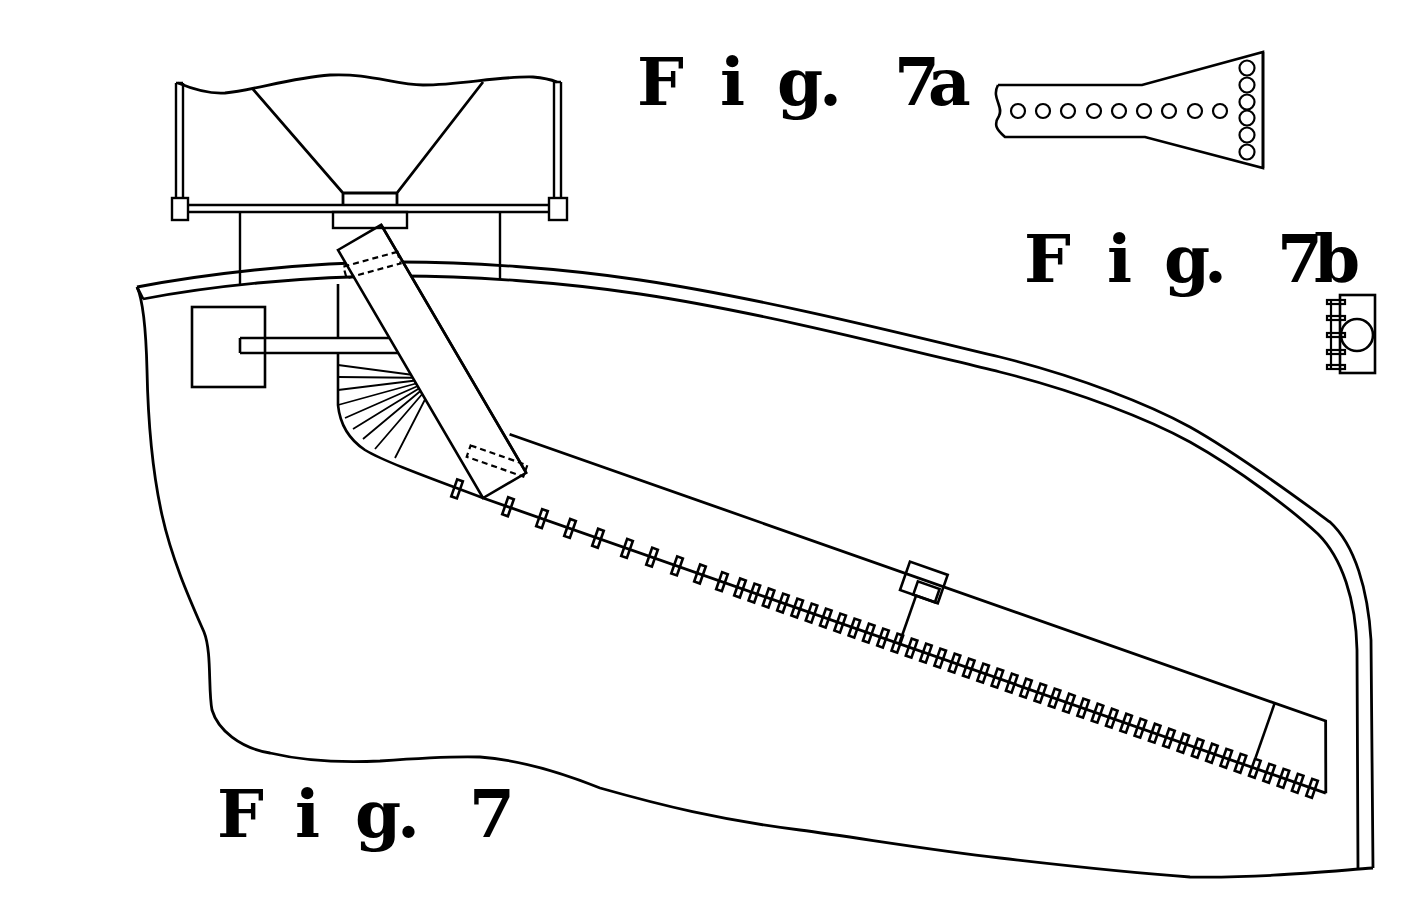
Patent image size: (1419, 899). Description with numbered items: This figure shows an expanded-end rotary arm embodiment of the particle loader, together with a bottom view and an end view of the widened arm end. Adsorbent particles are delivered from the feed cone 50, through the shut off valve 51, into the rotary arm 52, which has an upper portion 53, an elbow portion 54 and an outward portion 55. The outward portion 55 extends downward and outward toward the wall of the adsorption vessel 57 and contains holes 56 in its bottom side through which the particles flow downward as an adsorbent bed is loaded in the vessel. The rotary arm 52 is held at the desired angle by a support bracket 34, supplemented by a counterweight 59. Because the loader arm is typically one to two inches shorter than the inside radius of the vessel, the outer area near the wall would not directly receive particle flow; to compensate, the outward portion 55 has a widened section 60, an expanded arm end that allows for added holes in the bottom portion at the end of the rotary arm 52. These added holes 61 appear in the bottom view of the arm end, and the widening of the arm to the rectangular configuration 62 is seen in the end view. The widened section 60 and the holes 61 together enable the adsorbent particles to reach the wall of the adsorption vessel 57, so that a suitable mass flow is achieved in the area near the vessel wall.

In FIG. 7, the support bracket 34 is at (470, 373).
In FIG. 7, the feed cone 50 is at (375, 113).
In FIG. 7, the shut off valve 51 is at (420, 228).
In FIG. 7, the rotary arm 52 is at (935, 560).
In FIG. 7, the upper portion 53 is at (405, 307).
In FIG. 7, the elbow portion 54 is at (340, 410).
In FIG. 7, the outward portion 55 is at (640, 478).
In FIG. 7, the holes 56 is at (454, 486).
In FIG. 7, the adsorption vessel 57 is at (1192, 427).
In FIG. 7, the counterweight 59 is at (240, 390).
In FIG. 7, the widened section 60 is at (1280, 735).
In FIG. 7A, the widened section 60 is at (1113, 84).
In FIG. 7A, the holes 61 is at (1268, 140).
In FIG. 7B, the rectangular configuration 62 is at (1347, 377).